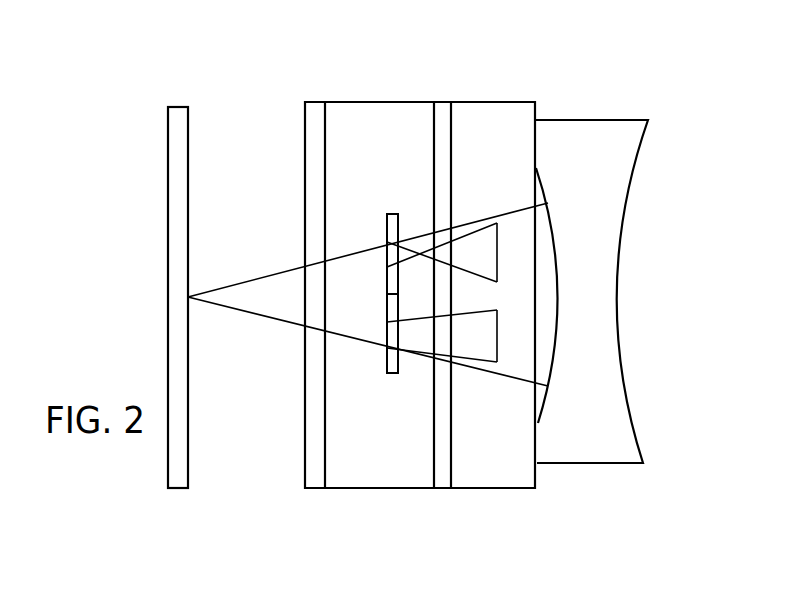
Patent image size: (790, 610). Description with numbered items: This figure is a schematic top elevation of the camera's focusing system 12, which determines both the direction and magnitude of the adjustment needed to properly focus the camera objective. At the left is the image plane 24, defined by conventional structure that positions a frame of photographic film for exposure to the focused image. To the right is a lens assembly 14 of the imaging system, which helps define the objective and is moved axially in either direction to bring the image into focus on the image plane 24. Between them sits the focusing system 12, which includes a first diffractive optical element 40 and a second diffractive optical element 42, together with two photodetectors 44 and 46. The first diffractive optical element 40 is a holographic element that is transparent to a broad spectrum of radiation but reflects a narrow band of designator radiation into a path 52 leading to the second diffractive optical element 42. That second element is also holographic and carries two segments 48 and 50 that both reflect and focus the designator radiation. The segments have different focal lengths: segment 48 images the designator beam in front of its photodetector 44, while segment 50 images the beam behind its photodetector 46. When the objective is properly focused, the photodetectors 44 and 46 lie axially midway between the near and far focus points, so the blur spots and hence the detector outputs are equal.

The focusing system 12 is at (420, 286).
The lens assembly 14 is at (630, 197).
The image plane 24 is at (167, 158).
The first diffractive optical element 40 is at (378, 490).
The second diffractive optical element 42 is at (483, 492).
The photodetector 44 is at (388, 253).
The photodetector 46 is at (390, 335).
The segment 48 is at (512, 247).
The segment 50 is at (497, 333).
The path 52 is at (485, 226).